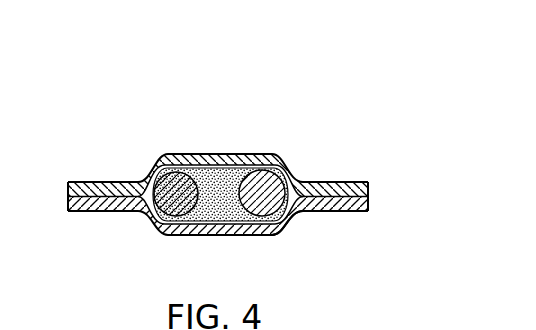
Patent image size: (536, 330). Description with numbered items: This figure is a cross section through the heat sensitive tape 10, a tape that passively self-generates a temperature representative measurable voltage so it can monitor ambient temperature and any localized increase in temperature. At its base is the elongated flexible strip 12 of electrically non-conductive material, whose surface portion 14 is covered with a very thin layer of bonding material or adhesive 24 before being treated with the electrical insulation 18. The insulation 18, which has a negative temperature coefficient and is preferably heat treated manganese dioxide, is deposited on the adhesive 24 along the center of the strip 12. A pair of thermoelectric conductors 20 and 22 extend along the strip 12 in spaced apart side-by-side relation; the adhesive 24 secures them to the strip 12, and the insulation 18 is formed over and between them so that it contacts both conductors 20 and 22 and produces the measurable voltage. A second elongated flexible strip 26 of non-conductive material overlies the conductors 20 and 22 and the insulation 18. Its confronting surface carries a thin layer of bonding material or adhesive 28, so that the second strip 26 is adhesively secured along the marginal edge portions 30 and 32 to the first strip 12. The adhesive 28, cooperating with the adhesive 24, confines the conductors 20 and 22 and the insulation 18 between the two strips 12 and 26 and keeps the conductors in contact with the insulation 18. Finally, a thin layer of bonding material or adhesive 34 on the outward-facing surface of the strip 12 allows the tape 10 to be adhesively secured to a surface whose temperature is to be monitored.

The heat sensitive tape 10 is at (281, 134).
The elongated flexible strip 12 is at (343, 205).
The surface portion 14 is at (216, 226).
The electrical insulation 18 is at (229, 165).
The thermoelectric conductor 20 is at (163, 156).
The thermoelectric conductor 22 is at (266, 184).
The layer of bonding material or adhesive 24 is at (107, 203).
The second elongated flexible strip 26 is at (88, 183).
The layer of bonding material or adhesive 28 is at (195, 166).
The marginal edge portion 30 is at (67, 189).
The marginal edge portion 32 is at (368, 181).
The layer of bonding material or adhesive 34 is at (258, 233).